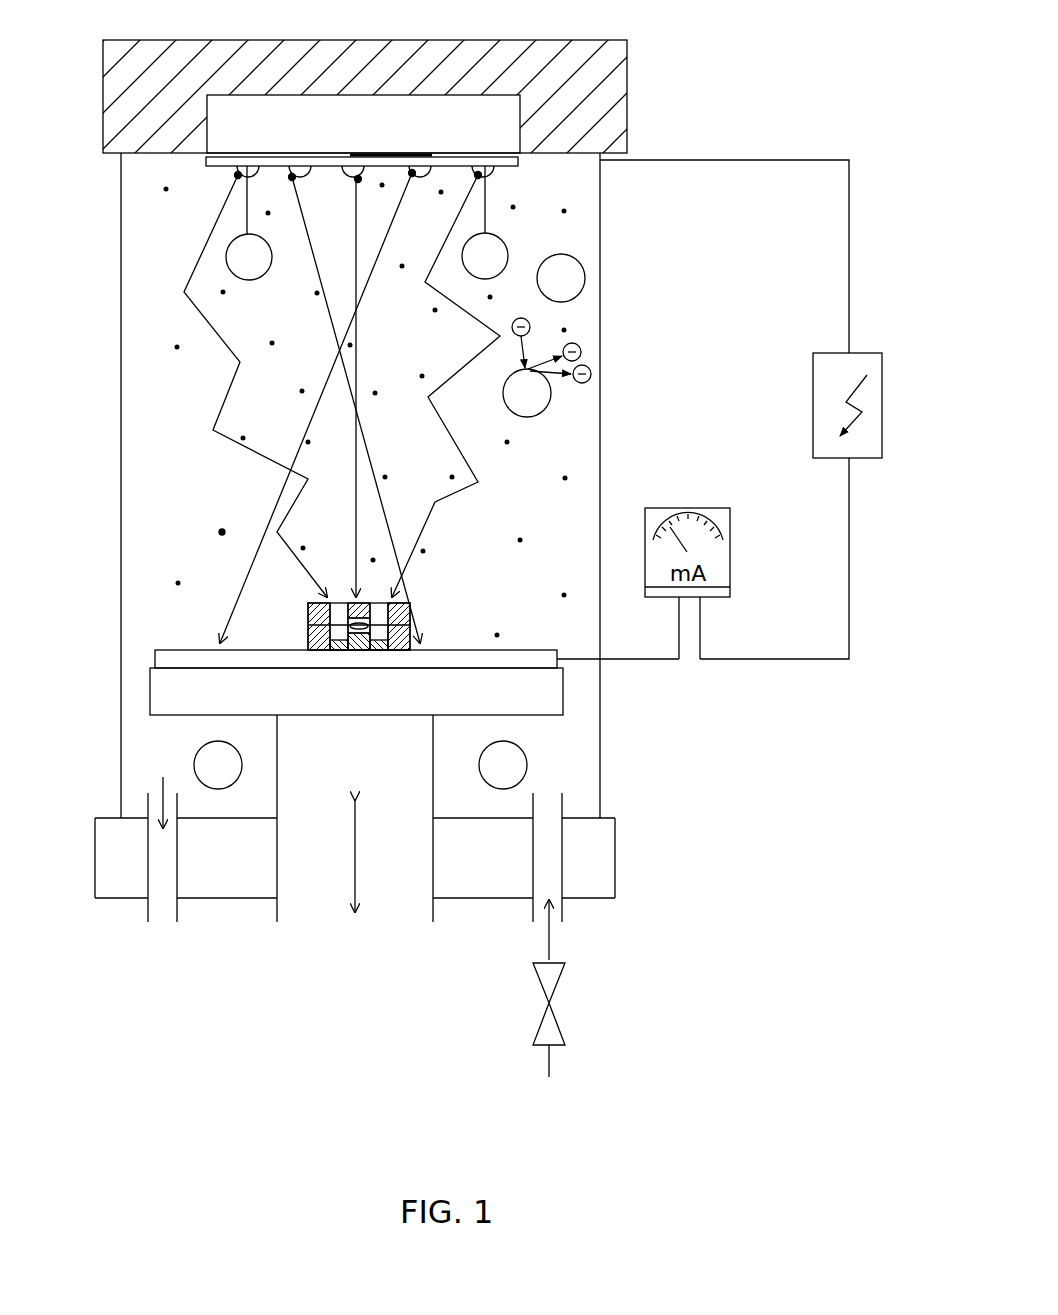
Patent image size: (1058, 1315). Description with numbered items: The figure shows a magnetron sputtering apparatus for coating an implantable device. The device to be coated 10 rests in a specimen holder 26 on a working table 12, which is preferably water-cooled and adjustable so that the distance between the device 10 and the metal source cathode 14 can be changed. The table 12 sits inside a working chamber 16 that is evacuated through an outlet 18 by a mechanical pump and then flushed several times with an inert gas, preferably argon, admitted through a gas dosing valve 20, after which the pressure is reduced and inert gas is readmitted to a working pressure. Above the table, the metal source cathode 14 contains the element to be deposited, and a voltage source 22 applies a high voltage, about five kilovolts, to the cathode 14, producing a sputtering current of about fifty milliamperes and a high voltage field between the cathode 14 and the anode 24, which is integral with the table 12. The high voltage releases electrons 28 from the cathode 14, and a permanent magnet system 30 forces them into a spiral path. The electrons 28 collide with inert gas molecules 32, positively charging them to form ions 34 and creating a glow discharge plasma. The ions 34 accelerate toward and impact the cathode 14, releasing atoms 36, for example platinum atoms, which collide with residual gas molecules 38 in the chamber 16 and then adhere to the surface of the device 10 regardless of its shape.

The device to be coated 10 is at (373, 652).
The working table 12 is at (563, 690).
The metal source cathode 14 is at (500, 162).
The working chamber 16 is at (122, 445).
The outlet 18 is at (148, 917).
The gas dosing valve 20 is at (553, 1003).
The voltage source 22 is at (882, 410).
The anode 24 is at (453, 650).
The specimen holder 26 is at (308, 628).
The electrons 28 is at (581, 349).
The permanent magnet system 30 is at (512, 100).
The inert gas molecules 32 is at (576, 262).
The ions 34 is at (502, 249).
The atoms 36 is at (238, 178).
The residual gas molecules 38 is at (222, 532).